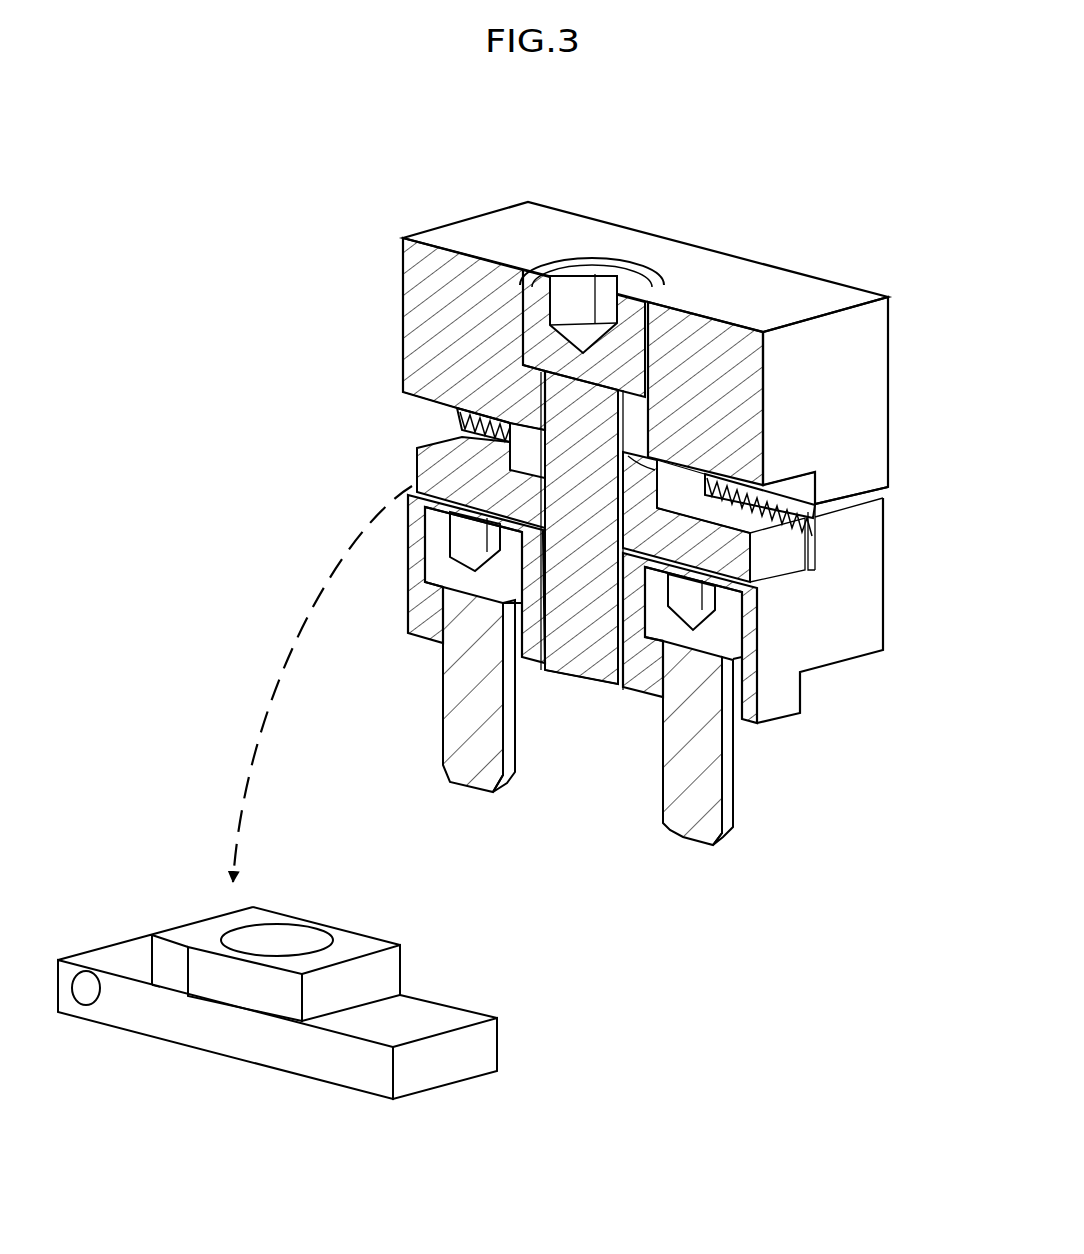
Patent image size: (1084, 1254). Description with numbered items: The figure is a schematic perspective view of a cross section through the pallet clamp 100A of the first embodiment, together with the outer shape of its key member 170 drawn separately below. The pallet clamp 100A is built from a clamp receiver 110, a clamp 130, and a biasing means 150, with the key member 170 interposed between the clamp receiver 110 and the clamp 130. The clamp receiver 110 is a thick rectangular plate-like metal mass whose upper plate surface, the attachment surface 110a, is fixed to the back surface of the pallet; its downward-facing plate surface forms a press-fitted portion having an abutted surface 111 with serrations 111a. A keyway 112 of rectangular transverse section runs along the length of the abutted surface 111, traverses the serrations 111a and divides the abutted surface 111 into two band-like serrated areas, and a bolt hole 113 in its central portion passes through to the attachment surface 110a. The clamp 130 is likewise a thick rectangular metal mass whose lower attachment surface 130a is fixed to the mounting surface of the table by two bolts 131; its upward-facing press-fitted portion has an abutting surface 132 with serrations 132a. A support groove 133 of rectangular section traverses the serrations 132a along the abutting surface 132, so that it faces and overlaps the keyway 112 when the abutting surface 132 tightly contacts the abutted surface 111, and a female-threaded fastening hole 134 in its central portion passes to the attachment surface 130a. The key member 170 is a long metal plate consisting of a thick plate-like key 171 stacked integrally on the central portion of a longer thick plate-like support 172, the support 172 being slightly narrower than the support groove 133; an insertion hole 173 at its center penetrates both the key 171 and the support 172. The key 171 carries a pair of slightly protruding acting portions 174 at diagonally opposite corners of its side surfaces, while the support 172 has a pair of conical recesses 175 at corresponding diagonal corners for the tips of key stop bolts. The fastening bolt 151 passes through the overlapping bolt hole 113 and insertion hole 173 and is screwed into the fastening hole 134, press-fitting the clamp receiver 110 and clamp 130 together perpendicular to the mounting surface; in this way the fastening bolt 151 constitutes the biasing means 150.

The pallet clamp 100A is at (414, 176).
The clamp receiver 110 is at (621, 349).
The attachment surface 110a is at (805, 283).
The abutted surface 111 is at (884, 508).
The serrations 111a is at (455, 410).
The keyway 112 is at (795, 478).
The bolt hole 113 is at (522, 303).
The clamp 130 is at (605, 615).
The attachment surface 130a is at (415, 645).
The bolts 131 is at (678, 763).
The abutting surface 132 is at (862, 510).
The serrations 132a is at (462, 432).
The support groove 133 is at (790, 568).
The fastening hole 134 is at (548, 622).
The biasing means 150 is at (630, 447).
The fastening bolt 151 is at (610, 290).
The key member 170 is at (415, 462).
The key 171 is at (372, 978).
The support 172 is at (465, 1048).
The insertion hole 173 is at (288, 940).
The acting portions 174 is at (167, 963).
The conical recesses 175 is at (94, 1000).